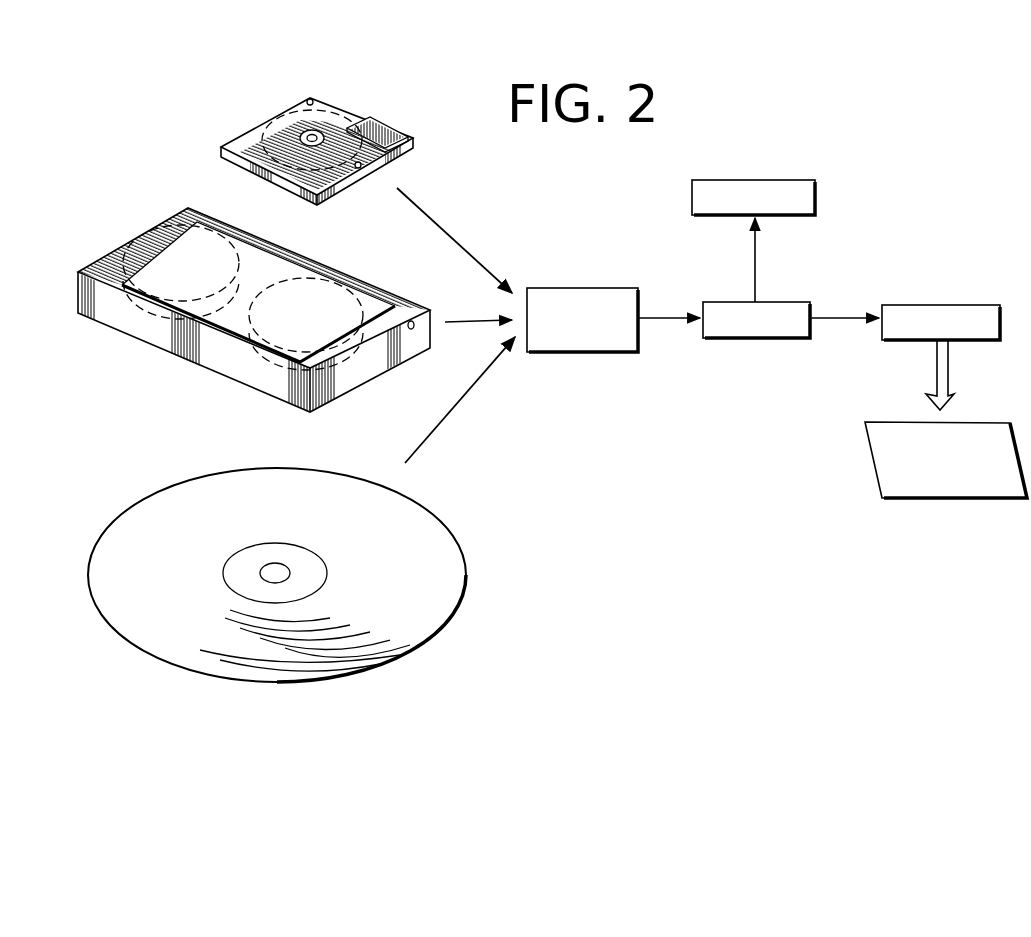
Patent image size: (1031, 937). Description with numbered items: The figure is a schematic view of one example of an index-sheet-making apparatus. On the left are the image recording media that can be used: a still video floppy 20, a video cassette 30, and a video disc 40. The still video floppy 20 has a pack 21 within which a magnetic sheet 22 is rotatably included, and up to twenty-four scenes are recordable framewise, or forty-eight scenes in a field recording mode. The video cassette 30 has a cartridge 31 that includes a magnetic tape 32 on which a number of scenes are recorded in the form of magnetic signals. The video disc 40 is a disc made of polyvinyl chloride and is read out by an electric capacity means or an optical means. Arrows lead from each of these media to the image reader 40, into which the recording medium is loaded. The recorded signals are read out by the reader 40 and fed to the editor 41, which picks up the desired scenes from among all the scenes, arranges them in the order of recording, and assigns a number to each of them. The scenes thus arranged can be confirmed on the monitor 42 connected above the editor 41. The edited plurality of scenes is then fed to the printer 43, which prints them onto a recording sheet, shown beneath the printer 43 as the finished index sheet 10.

The index sheet 10 is at (943, 480).
The still video floppy 20 is at (314, 123).
The pack 21 is at (347, 185).
The magnetic sheet 22 is at (263, 120).
The video cassette 30 is at (254, 312).
The cartridge 31 is at (140, 327).
The magnetic tape 32 is at (380, 356).
The video disc / image reader 40 is at (478, 574).
The editor 41 is at (750, 340).
The monitor 42 is at (755, 180).
The printer 43 is at (940, 303).